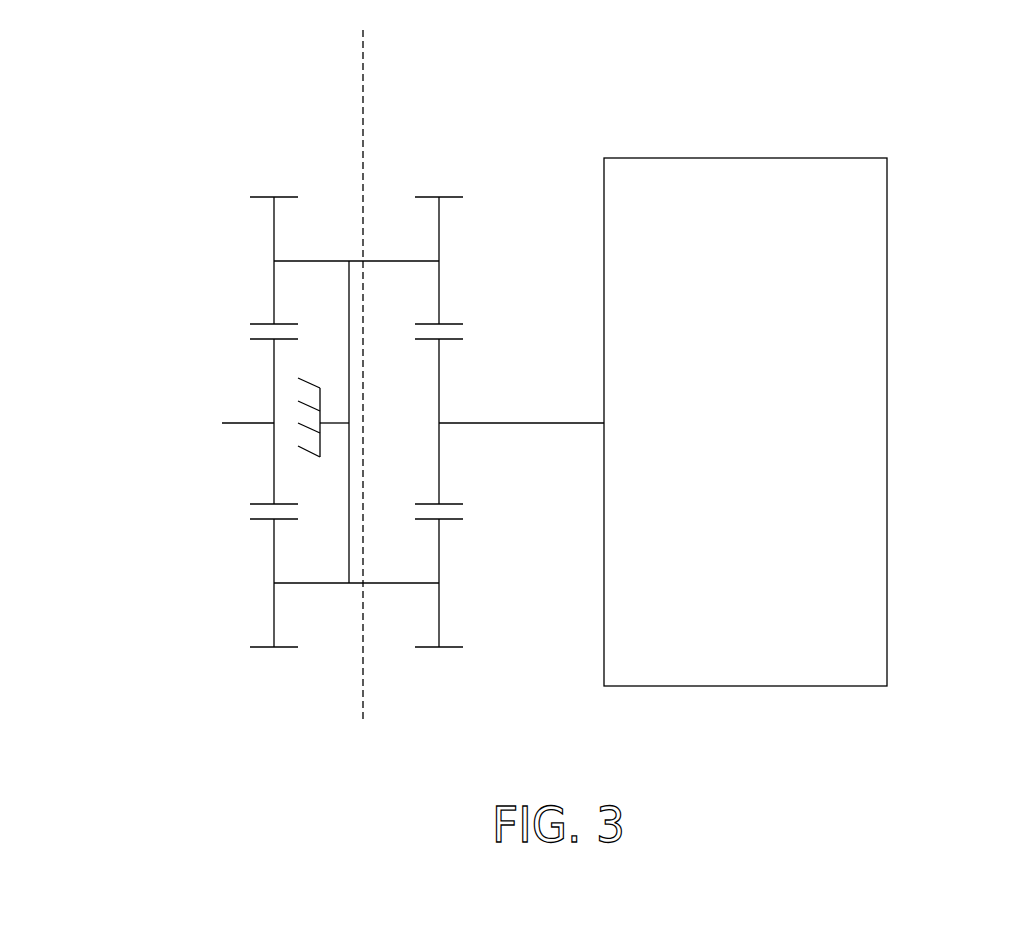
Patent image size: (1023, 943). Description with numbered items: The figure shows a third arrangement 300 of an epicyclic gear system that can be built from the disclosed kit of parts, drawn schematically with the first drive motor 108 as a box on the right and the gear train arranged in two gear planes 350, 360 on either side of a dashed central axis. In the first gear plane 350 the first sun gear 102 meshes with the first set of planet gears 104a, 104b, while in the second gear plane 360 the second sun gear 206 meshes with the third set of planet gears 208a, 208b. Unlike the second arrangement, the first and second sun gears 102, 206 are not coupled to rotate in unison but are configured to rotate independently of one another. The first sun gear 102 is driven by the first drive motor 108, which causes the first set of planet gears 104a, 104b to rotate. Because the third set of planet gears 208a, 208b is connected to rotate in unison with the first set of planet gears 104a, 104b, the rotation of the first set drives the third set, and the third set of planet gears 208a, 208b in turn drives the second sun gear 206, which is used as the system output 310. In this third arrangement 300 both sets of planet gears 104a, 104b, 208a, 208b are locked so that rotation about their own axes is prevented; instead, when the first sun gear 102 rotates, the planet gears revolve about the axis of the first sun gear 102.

The third arrangement 300 is at (896, 125).
The first drive motor 108 is at (887, 422).
The first sun gear 102 is at (439, 383).
The first set of planet gears 104a is at (439, 228).
The first set of planet gears 104b is at (439, 556).
The second sun gear 206 is at (274, 477).
The third set of planet gears 208a is at (274, 229).
The third set of planet gears 208b is at (274, 557).
The system output 310 is at (216, 423).
The first gear plane 350 is at (438, 48).
The second gear plane 360 is at (290, 48).